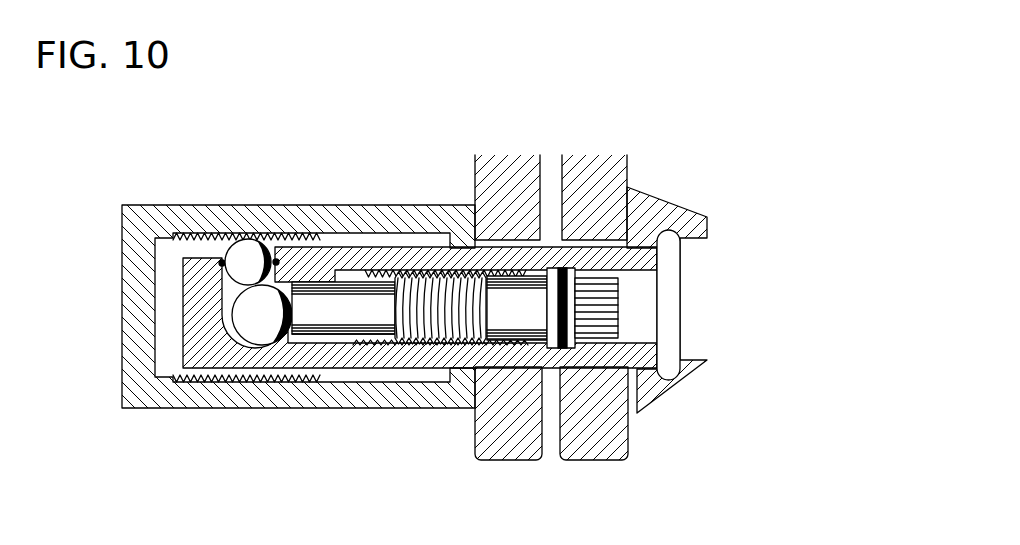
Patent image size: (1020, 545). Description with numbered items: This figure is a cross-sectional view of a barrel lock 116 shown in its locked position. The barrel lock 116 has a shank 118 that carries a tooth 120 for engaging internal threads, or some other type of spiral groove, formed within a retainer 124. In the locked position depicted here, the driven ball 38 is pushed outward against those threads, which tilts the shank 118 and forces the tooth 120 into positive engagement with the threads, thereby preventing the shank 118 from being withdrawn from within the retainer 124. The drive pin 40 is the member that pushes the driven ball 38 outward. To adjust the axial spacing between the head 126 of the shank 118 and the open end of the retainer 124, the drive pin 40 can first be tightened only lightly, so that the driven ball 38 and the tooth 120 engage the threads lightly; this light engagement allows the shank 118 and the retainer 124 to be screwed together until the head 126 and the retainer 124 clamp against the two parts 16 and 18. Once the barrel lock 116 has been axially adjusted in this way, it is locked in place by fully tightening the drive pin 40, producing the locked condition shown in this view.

The barrel lock 116 is at (350, 293).
The retainer 124 is at (259, 283).
The tooth 120 is at (420, 315).
The shank 118 is at (397, 247).
The driven ball 38 is at (249, 253).
The drive pin 40 is at (360, 308).
The part 16 is at (473, 432).
The part 18 is at (628, 443).
The head 126 is at (687, 210).